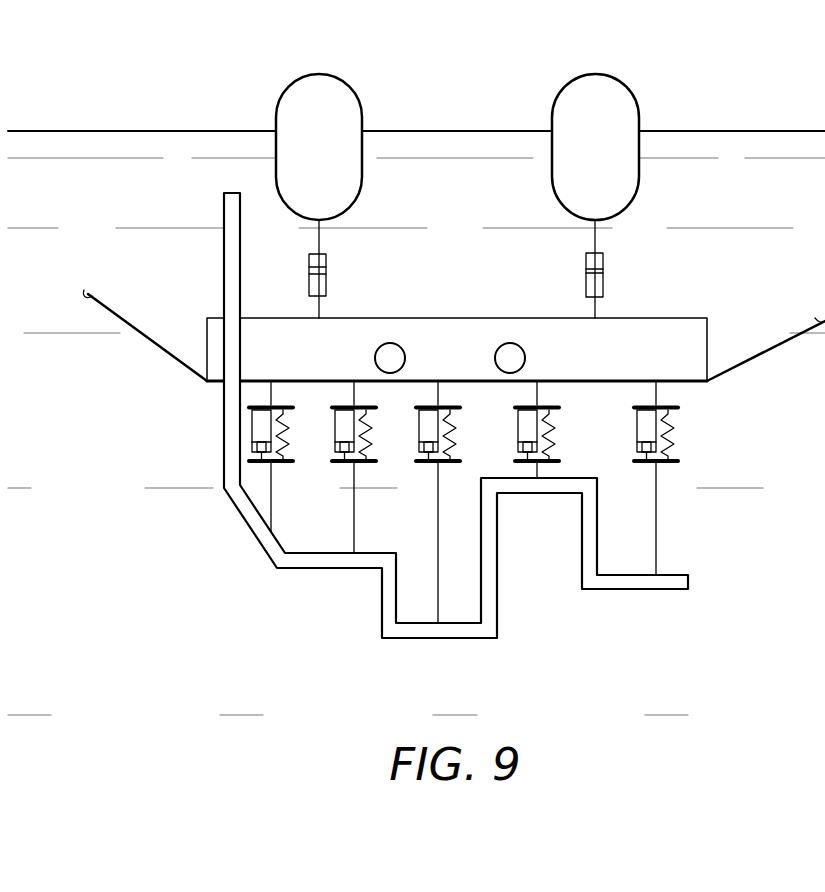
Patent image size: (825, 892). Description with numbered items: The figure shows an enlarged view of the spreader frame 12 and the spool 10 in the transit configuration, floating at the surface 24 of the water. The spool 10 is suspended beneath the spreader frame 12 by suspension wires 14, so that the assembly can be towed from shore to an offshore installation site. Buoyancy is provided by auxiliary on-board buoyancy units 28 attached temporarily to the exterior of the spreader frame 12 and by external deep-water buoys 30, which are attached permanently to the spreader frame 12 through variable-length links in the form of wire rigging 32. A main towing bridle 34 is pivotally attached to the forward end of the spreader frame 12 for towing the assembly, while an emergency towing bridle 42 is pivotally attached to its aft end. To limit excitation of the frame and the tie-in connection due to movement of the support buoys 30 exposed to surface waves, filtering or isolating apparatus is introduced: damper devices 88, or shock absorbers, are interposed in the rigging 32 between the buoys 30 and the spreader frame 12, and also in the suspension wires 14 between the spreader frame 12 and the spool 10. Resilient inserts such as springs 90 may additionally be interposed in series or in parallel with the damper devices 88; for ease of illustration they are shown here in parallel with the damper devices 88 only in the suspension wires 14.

The spool 10 is at (626, 592).
The spreader frame 12 is at (490, 318).
The wires 14 is at (657, 535).
The surface 24 is at (66, 130).
The auxiliary on-board buoyancy units 28 is at (386, 343).
The external deep-water buoys 30 is at (319, 72).
The wire rigging 32 is at (322, 240).
The main towing bridle 34 is at (790, 352).
The emergency towing bridle 42 is at (138, 335).
The damper devices 88 is at (604, 278).
The springs 90 is at (290, 437).